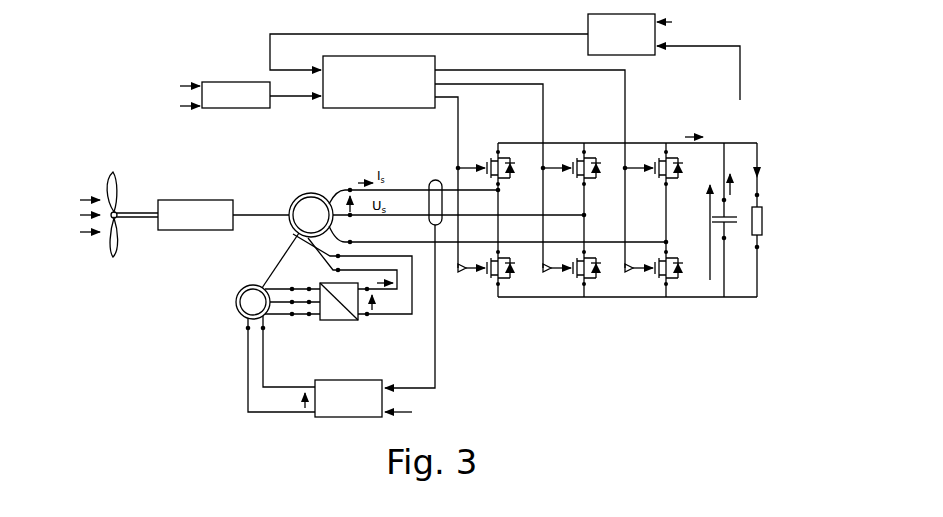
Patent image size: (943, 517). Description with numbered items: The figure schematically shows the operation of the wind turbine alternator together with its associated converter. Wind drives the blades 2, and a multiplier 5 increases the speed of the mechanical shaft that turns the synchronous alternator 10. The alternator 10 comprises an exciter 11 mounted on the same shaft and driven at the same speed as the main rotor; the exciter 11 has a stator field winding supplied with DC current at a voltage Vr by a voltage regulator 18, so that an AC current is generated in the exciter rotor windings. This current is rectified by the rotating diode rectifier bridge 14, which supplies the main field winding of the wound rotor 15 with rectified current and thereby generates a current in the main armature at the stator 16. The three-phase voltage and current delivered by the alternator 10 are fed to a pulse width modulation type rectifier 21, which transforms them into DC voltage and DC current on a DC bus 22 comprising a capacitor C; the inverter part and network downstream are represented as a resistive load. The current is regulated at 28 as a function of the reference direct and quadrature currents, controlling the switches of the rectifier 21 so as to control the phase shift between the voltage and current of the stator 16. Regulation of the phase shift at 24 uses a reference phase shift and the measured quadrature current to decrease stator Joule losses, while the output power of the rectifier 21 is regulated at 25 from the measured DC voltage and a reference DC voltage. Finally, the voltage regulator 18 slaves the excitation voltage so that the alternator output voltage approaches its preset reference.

The blades 2 is at (117, 193).
The multiplier 5 is at (192, 218).
The synchronous alternator 10 is at (316, 188).
The wound rotor 15 is at (300, 192).
The stator 16 is at (311, 215).
The exciter 11 is at (278, 322).
The rectifier bridge 14 is at (337, 312).
The voltage regulator 18 is at (371, 393).
The rectifier 21 is at (672, 138).
The DC bus 22 is at (757, 138).
The phase shift regulation 24 is at (175, 96).
The output power regulation 25 is at (677, 54).
The current regulation 28 is at (447, 151).